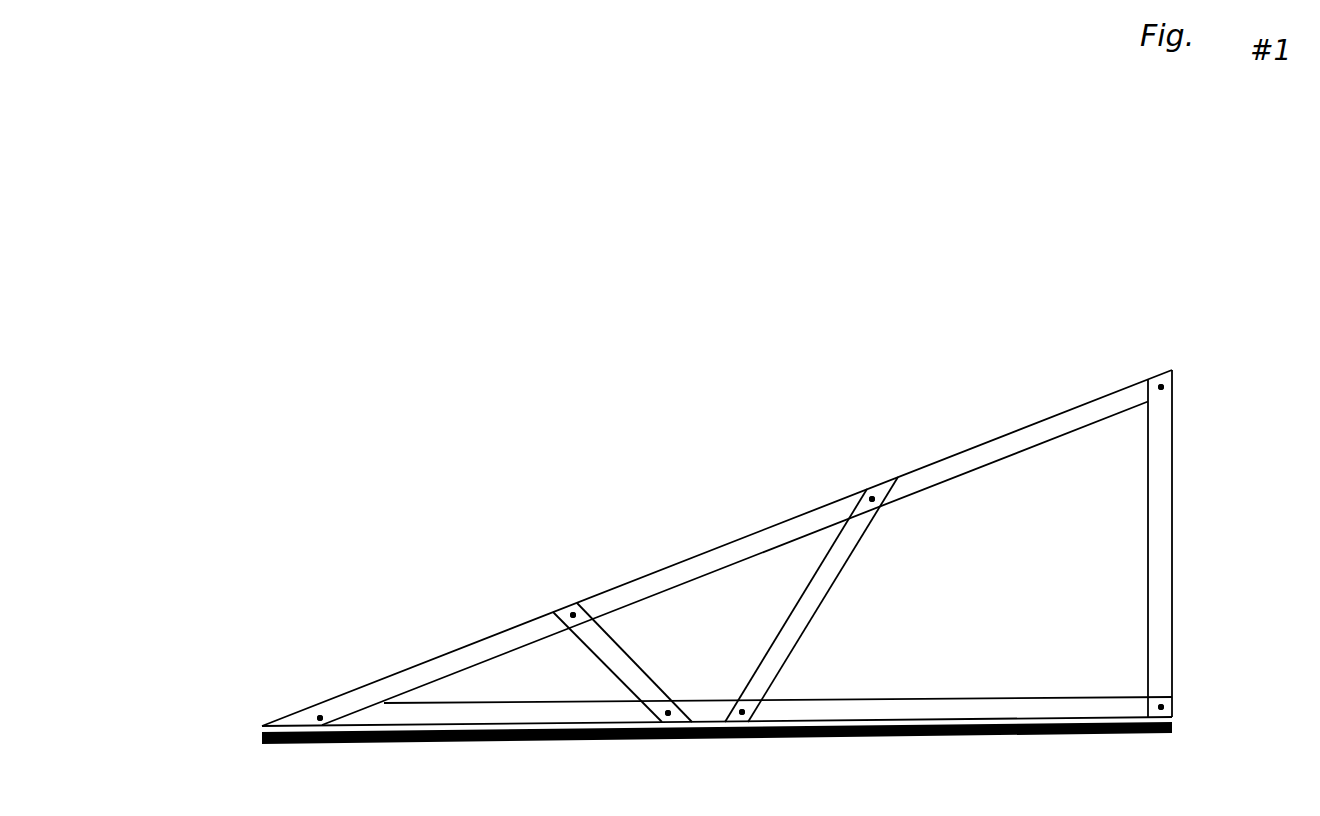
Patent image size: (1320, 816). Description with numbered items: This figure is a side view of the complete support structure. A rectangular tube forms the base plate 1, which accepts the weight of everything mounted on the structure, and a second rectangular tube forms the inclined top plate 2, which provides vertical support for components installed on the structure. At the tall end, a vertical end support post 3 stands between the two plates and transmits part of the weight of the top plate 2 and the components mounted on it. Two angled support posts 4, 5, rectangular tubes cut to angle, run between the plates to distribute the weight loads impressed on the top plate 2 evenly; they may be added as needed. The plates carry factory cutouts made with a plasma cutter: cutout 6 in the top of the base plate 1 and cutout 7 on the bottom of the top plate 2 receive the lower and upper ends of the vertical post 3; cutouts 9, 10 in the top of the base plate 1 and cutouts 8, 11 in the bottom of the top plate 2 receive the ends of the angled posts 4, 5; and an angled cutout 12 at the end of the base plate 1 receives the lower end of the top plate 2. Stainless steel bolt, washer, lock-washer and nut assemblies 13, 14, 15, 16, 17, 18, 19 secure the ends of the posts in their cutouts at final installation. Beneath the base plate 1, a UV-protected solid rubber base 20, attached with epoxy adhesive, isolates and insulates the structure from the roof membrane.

The base plate 1 is at (717, 684).
The top plate 2 is at (717, 548).
The vertical end support post 3 is at (1196, 543).
The angled support post 4 is at (818, 599).
The angled support post 5 is at (636, 657).
The cutout in top of base plate 6 is at (1182, 707).
The cutout on bottom of top plate 7 is at (1182, 382).
The cutout of bottom of top plate 8 is at (874, 477).
The cutout of top of base plate 9 is at (735, 741).
The cutout of top of base plate 10 is at (678, 741).
The cutout of bottom of top plate 11 is at (559, 596).
The angled cutout of end of base plate 12 is at (301, 700).
The stainless steel bolt, washers, lock-washer and nut assembly 13 is at (1116, 669).
The stainless steel bolt, washers, lock-washer and nut assembly 14 is at (1116, 427).
The stainless steel bolt, washers, lock-washer and nut assembly 15 is at (911, 524).
The stainless steel bolt, washers, lock-washer and nut assembly 16 is at (808, 679).
The stainless steel bolt, washers, lock-washer and nut assembly 17 is at (692, 680).
The stainless steel bolt, washers, lock-washer and nut assembly 18 is at (529, 654).
The stainless steel bolt, washers, lock-washer and nut assembly 19 is at (366, 657).
The solid rubber base 20 is at (717, 748).